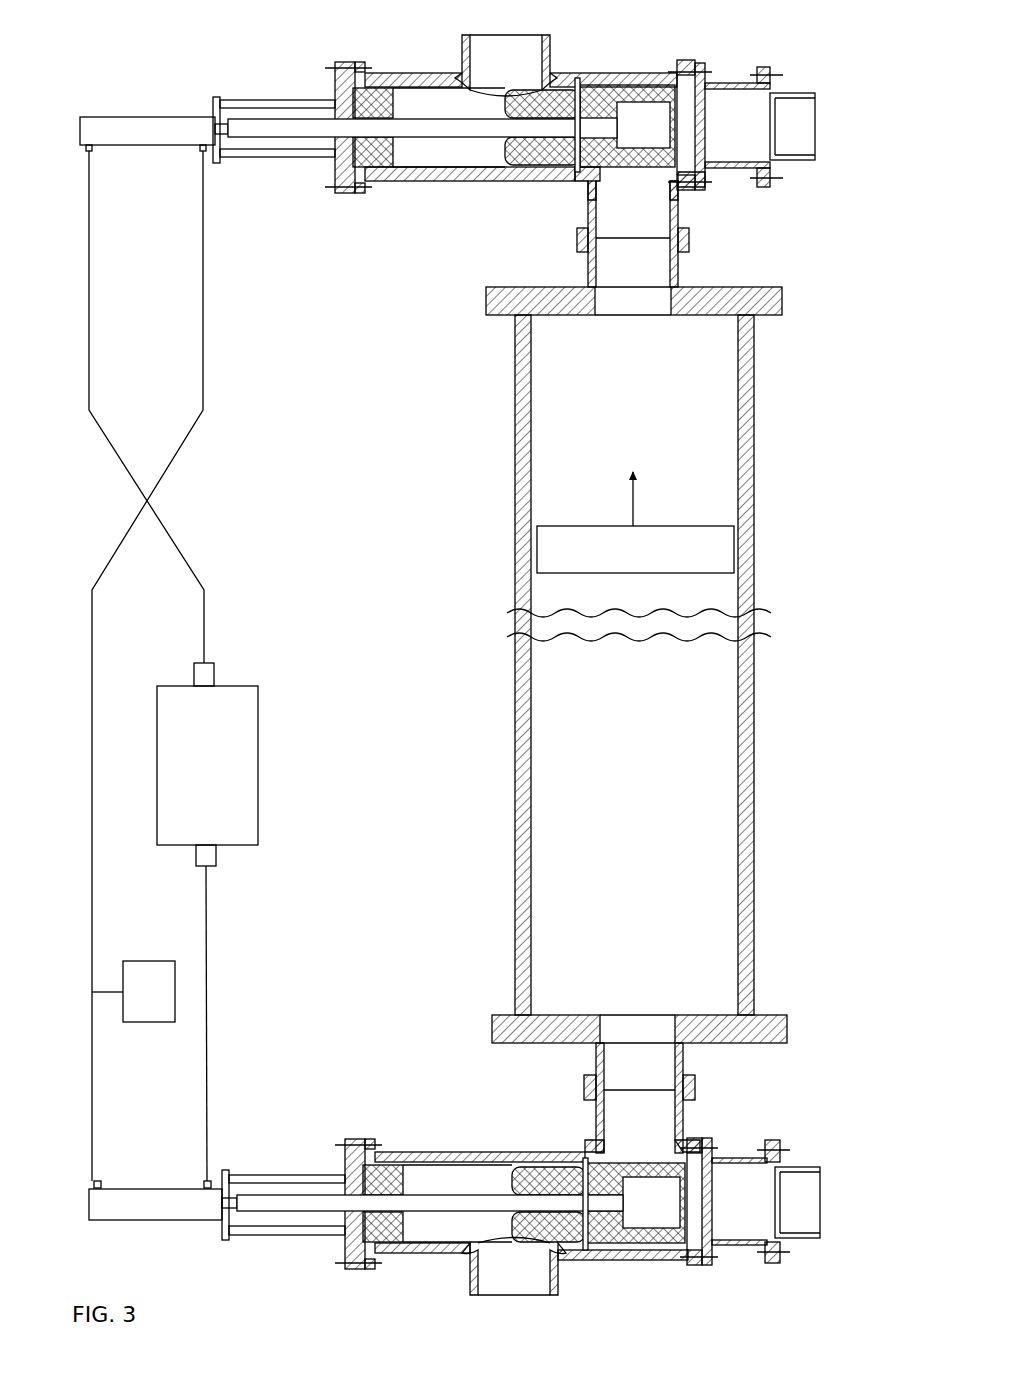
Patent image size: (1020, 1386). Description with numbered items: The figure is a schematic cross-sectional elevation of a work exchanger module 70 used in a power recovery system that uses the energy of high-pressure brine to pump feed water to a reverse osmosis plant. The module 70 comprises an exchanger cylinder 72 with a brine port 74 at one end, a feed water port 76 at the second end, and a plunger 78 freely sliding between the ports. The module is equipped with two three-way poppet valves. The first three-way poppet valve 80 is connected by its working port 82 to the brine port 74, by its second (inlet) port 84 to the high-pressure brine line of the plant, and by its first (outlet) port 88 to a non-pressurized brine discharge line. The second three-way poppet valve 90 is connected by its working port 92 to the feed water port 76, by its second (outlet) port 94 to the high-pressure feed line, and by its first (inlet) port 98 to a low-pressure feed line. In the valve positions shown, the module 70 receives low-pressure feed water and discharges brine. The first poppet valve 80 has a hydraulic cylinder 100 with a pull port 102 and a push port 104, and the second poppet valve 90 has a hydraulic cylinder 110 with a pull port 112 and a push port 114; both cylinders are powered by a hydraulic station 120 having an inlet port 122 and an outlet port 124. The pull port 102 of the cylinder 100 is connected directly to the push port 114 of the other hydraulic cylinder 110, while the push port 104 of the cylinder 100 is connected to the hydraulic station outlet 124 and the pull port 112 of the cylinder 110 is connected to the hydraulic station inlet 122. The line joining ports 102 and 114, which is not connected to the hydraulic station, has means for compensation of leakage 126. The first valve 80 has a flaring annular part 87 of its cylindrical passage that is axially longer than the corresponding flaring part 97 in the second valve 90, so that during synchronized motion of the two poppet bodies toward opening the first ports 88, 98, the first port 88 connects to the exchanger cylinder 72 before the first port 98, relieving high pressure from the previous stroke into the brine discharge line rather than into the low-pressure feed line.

The work exchanger module 70 is at (798, 455).
The exchanger cylinder 72 is at (755, 760).
The brine port 74 is at (676, 268).
The feed water port 76 is at (684, 1055).
The plunger 78 is at (647, 560).
The first three-way poppet valve 80 is at (283, 62).
The working port 82 is at (678, 213).
The second (inlet) port 84 is at (505, 36).
The flaring annular part 87 is at (700, 125).
The first (outlet) port 88 is at (798, 92).
The second three-way poppet valve 90 is at (403, 1122).
The working port 92 is at (686, 1128).
The second (outlet) port 94 is at (560, 1270).
The flaring part 97 is at (708, 1205).
The first (inlet) port 98 is at (808, 1166).
The hydraulic cylinder 100 is at (148, 117).
The pull port 102 is at (213, 160).
The push port 104 is at (92, 152).
The hydraulic cylinder 110 is at (155, 1220).
The pull port 112 is at (210, 1183).
The push port 114 is at (98, 1183).
The hydraulic station 120 is at (230, 772).
The inlet port 122 is at (216, 860).
The outlet port 124 is at (216, 673).
The means for compensation of leakage 126 is at (168, 1004).